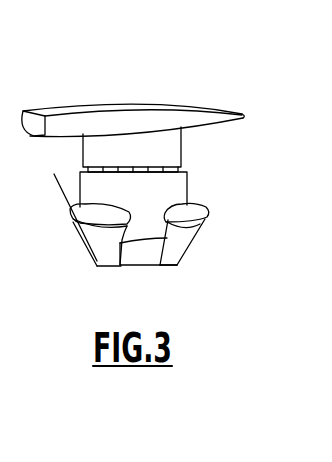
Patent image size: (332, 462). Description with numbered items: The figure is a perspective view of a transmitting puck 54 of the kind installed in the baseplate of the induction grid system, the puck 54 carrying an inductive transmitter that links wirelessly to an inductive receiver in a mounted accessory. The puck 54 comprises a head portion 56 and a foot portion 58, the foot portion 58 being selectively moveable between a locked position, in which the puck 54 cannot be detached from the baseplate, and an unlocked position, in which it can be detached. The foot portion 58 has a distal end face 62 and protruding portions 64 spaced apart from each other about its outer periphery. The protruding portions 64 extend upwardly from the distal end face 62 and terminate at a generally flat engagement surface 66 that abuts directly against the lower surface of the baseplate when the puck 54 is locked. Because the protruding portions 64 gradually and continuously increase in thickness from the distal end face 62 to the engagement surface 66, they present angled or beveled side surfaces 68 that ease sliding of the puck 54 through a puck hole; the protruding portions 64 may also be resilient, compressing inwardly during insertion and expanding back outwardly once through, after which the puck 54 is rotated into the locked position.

The puck 54 is at (144, 87).
The head portion 56 is at (231, 112).
The foot portion 58 is at (188, 184).
The distal end face 62 is at (162, 266).
The protruding portions 64 is at (79, 221).
The engagement surface 66 is at (78, 204).
The angled/beveled side surface 68 is at (98, 248).